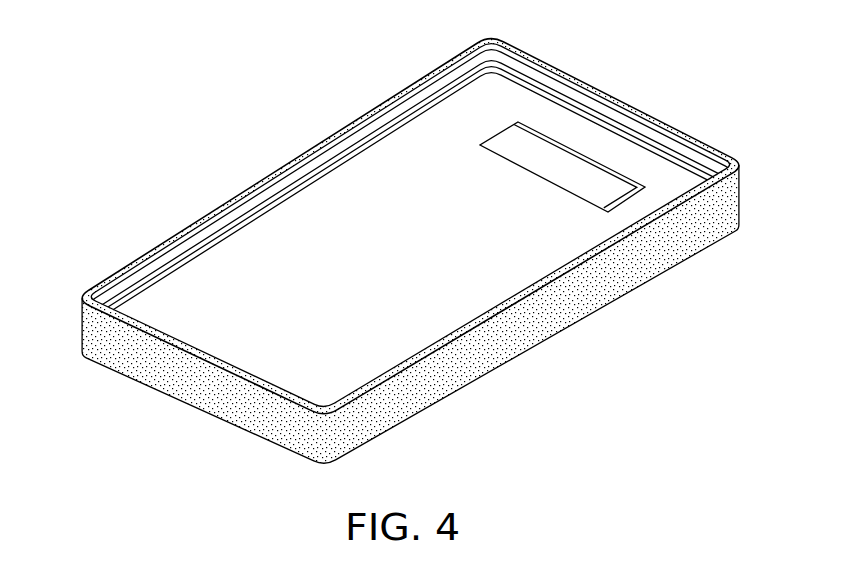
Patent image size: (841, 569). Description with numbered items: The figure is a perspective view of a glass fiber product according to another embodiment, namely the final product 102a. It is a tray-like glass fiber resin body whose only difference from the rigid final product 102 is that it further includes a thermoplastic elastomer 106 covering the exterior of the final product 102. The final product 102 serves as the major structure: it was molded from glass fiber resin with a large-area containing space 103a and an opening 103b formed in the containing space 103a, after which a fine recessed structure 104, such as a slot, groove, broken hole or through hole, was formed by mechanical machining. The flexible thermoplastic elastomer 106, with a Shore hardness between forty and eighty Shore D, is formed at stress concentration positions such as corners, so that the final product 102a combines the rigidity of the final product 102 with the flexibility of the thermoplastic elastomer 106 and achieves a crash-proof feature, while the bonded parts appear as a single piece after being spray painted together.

The final product 102 is at (311, 222).
The final product 102a is at (653, 86).
The containing space 103a is at (425, 223).
The opening 103b is at (520, 165).
The recessed structure 104 is at (205, 257).
The thermoplastic elastomer 106 is at (485, 360).